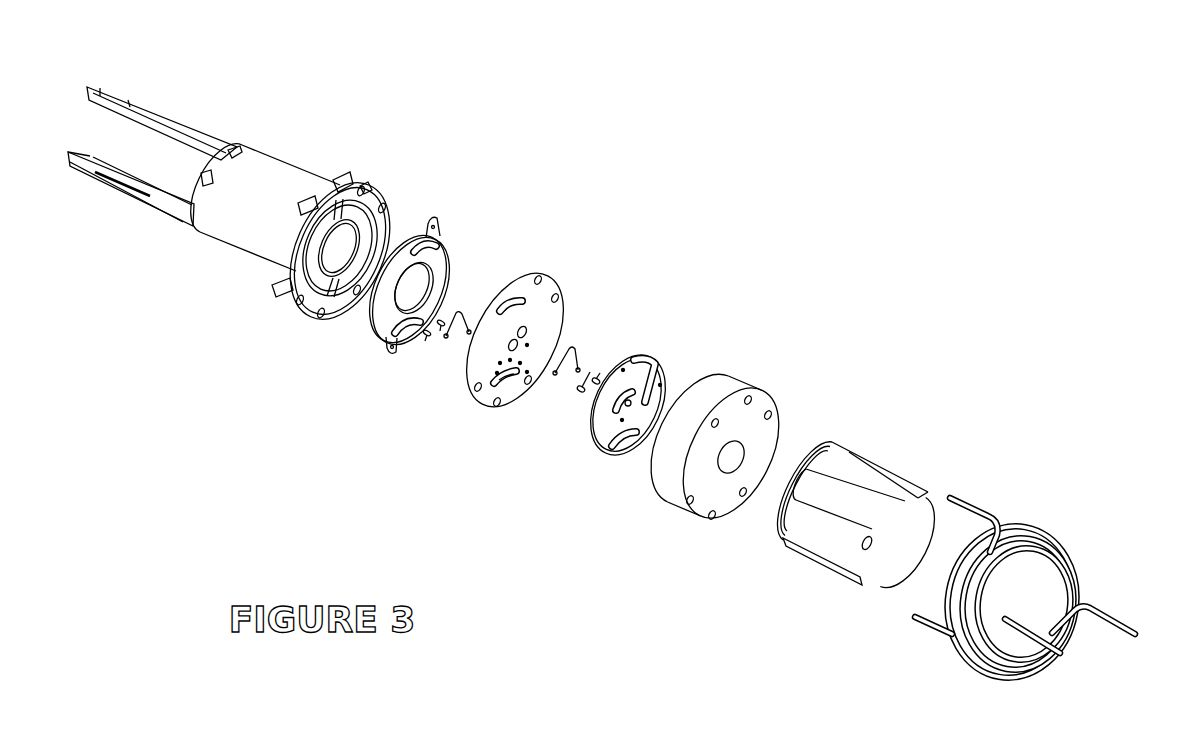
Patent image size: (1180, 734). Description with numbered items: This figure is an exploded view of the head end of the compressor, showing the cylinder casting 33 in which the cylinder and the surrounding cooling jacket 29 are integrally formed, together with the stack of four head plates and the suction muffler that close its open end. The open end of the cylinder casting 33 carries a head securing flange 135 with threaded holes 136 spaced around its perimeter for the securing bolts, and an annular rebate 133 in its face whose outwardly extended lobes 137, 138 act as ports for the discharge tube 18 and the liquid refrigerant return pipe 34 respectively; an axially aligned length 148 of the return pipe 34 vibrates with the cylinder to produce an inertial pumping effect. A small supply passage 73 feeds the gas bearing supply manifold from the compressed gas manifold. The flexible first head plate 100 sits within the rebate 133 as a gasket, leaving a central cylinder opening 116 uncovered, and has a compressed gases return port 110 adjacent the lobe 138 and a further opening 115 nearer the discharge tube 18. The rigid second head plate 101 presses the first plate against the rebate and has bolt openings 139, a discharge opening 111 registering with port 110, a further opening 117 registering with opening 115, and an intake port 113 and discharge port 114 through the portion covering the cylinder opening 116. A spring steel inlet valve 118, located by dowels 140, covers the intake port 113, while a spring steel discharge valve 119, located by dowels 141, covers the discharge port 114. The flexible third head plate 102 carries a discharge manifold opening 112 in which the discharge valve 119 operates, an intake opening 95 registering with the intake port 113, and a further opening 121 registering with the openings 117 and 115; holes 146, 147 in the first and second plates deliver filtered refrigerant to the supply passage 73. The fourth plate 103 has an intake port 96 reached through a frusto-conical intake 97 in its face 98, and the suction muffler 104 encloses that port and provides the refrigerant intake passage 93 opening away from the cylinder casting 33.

The discharge tube 18 is at (925, 632).
The cooling jacket 29 is at (278, 178).
The cylinder casting 33 is at (215, 210).
The liquid refrigerant return pipe 34 is at (988, 507).
The gas bearing supply passage 73 is at (320, 285).
The intake passage 93 is at (860, 547).
The intake opening 95 is at (617, 420).
The intake port 96 is at (723, 457).
The frusto-conical intake 97 is at (727, 465).
The face of fourth plate 98 is at (755, 405).
The first head plate 100 is at (440, 247).
The second head plate 101 is at (524, 330).
The third head plate 102 is at (669, 376).
The fourth plate 103 is at (765, 432).
The suction muffler 104 is at (876, 495).
The compressed gases return port 110 is at (436, 230).
The compressed gas discharge opening 111 is at (535, 296).
The discharge manifold opening 112 is at (664, 378).
The intake port 113 is at (516, 342).
The discharge port 114 is at (478, 360).
The further opening 115 is at (392, 352).
The cylinder opening 116 is at (380, 315).
The further opening 117 is at (511, 378).
The inlet valve 118 is at (461, 308).
The discharge valve 119 is at (574, 346).
The further opening 121 is at (625, 442).
The annular rebate 133 is at (384, 213).
The head securing flange 135 is at (302, 262).
The threaded holes 136 is at (375, 203).
The lobe 137 is at (325, 305).
The lobe 138 is at (368, 185).
The openings 139 is at (507, 290).
The dowels 140 is at (440, 332).
The dowels 141 is at (592, 371).
The hole 146 is at (395, 337).
The hole 147 is at (497, 380).
The axially aligned length 148 is at (960, 490).